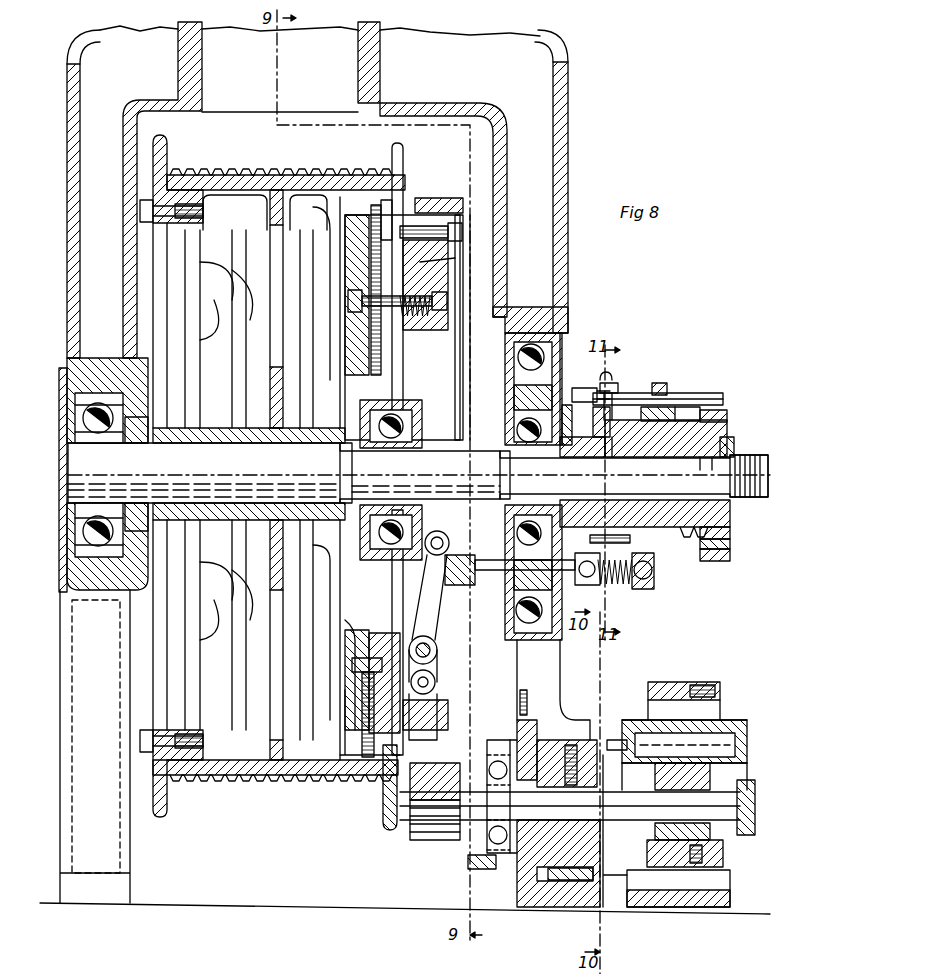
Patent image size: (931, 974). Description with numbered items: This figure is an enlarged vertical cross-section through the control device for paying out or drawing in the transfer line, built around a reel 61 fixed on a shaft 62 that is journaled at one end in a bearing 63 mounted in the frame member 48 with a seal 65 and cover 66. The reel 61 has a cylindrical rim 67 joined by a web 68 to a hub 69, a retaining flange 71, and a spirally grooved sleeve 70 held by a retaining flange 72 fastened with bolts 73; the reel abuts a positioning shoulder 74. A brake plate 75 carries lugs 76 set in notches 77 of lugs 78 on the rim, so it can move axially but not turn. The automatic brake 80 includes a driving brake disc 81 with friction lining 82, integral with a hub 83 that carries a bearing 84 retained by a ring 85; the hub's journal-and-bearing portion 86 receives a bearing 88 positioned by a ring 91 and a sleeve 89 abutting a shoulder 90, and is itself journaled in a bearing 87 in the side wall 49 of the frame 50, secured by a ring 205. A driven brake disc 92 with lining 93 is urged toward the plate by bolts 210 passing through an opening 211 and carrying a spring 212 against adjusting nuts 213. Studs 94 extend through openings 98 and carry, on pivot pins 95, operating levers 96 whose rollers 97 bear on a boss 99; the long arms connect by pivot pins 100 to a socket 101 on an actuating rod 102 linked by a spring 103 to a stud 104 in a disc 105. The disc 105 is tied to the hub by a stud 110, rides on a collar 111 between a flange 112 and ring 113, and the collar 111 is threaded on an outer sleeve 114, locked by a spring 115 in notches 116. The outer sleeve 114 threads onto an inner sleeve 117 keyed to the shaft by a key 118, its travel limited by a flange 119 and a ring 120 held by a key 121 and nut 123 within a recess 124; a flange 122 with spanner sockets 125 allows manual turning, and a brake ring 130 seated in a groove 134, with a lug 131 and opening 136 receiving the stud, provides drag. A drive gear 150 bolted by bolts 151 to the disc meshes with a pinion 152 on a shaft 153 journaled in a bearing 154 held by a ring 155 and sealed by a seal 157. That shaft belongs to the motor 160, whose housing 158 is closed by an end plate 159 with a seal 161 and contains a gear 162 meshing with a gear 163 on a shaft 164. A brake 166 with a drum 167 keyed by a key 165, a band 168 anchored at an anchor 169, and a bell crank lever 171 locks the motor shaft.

The frame member 48 is at (78, 610).
The side wall 49 is at (565, 278).
The frame 50 is at (568, 78).
The reel 61 is at (252, 165).
The shaft 62 is at (230, 443).
The bearing 63 is at (85, 438).
The seal 65 is at (135, 444).
The cover 66 is at (60, 540).
The cylindrical rim 67 is at (220, 200).
The web 68 is at (270, 380).
The hub 69 is at (292, 443).
The spirally grooved cylindrical sleeve 70 is at (240, 782).
The retaining flange 71 is at (388, 825).
The retaining flange 72 is at (157, 815).
The bolts 73 is at (140, 740).
The positioning shoulder 74 is at (340, 462).
The brake plate 75 is at (360, 254).
The lugs 76 is at (376, 215).
The notches 77 is at (386, 200).
The lugs 78 is at (400, 210).
The automatic brake 80 is at (340, 205).
The driving brake disc 81 is at (462, 270).
The friction lining 82 is at (437, 256).
The hub 83 is at (510, 440).
The bearing 84 is at (392, 448).
The ring 85 is at (360, 546).
The journal-and-bearing portion 86 is at (525, 400).
The bearing 87 is at (560, 322).
The bearing 88 is at (520, 400).
The sleeve 89 is at (528, 450).
The shoulder 90 is at (500, 472).
The ring 91 is at (572, 410).
The driven brake disc 92 is at (345, 700).
The frictional lining 93 is at (362, 712).
The studs 94 is at (372, 640).
The pivot pin 95 is at (438, 652).
The operating lever 96 is at (430, 615).
The roller 97 is at (435, 688).
The openings 98 is at (355, 625).
The boss 99 is at (437, 710).
The pivot pin 100 is at (449, 543).
The socket 101 is at (462, 566).
The actuating rod 102 is at (492, 570).
The spring 103 is at (620, 590).
The stud 104 is at (650, 580).
The disc 105 is at (658, 383).
The stud 110 is at (723, 398).
The collar 111 is at (690, 407).
The flange 112 is at (612, 410).
The ring 113 is at (668, 407).
The outer sleeve 114 is at (727, 414).
The spring 115 is at (613, 545).
The notches 116 is at (692, 530).
The inner sleeve 117 is at (638, 457).
The key 118 is at (578, 460).
The flange 119 is at (576, 575).
The ring 120 is at (734, 440).
The key 121 is at (722, 465).
The flange 122 is at (730, 557).
The nut 123 is at (755, 456).
The recess 124 is at (730, 533).
The sockets 125 is at (730, 545).
The brake ring 130 is at (612, 400).
The lug 131 is at (606, 380).
The circumferential groove 134 is at (612, 460).
The opening 136 is at (610, 372).
The drive gear 150 is at (463, 205).
The bolts 151 is at (462, 232).
The driving pinion 152 is at (432, 828).
The shaft 153 is at (766, 806).
The bearing 154 is at (498, 760).
The ring 155 is at (478, 870).
The seal 157 is at (514, 900).
The housing 158 is at (660, 684).
The end plate 159 is at (712, 776).
The motor 160 is at (738, 706).
The seal 161 is at (650, 845).
The gear 162 is at (695, 830).
The gear 163 is at (690, 700).
The shaft 164 is at (735, 742).
The key 165 is at (570, 785).
The brake 166 is at (525, 905).
The drum 167 is at (612, 880).
The band 168 is at (572, 882).
The anchor 169 is at (612, 740).
The bell crank lever 171 is at (560, 700).
The ring 205 is at (565, 345).
The bolts 210 is at (355, 290).
The opening 211 is at (447, 300).
The spring 212 is at (415, 316).
The adjusting nut 213 is at (470, 320).